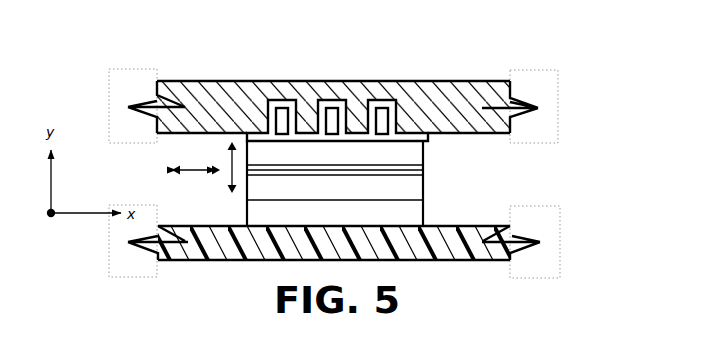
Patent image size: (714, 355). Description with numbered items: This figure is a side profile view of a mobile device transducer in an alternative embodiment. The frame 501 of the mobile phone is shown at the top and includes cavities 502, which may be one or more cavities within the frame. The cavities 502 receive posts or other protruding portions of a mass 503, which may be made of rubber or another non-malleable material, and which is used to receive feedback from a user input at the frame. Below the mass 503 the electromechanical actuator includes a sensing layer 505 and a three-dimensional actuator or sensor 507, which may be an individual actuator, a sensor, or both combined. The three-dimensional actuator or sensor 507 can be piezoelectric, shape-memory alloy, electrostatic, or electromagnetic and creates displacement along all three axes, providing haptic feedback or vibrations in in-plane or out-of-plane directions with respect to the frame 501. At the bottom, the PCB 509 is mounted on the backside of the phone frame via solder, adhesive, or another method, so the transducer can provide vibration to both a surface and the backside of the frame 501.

The frame 501 is at (267, 82).
The cavities 502 is at (373, 110).
The mass 503 is at (423, 153).
The sensing layer 505 is at (423, 170).
The 3D actuator or sensor 507 is at (423, 193).
The PCB 509 is at (423, 212).